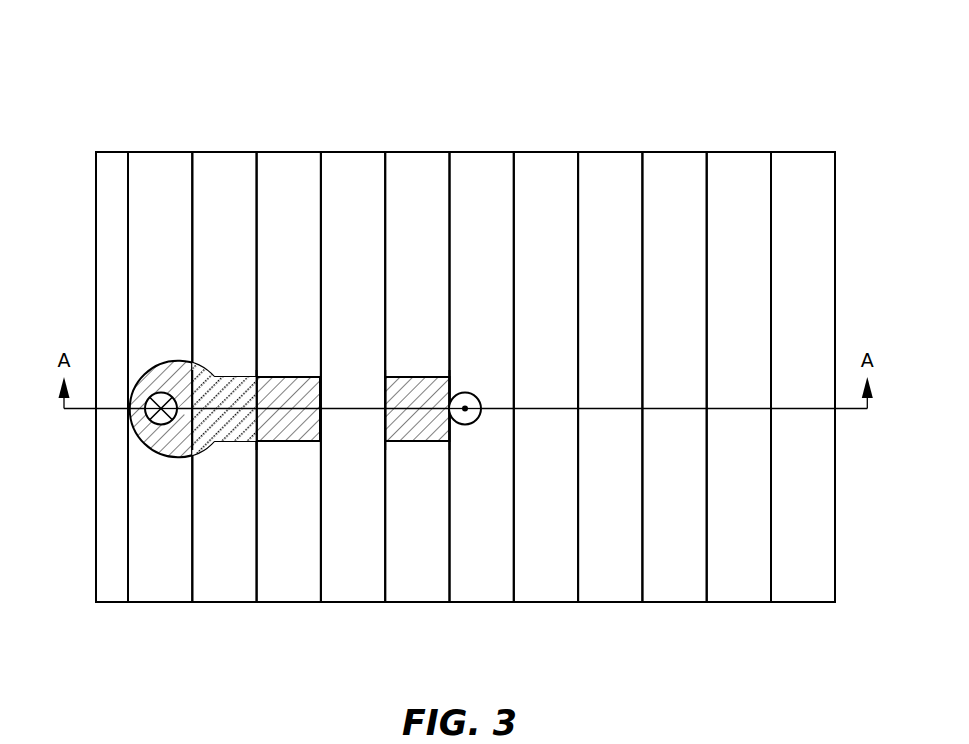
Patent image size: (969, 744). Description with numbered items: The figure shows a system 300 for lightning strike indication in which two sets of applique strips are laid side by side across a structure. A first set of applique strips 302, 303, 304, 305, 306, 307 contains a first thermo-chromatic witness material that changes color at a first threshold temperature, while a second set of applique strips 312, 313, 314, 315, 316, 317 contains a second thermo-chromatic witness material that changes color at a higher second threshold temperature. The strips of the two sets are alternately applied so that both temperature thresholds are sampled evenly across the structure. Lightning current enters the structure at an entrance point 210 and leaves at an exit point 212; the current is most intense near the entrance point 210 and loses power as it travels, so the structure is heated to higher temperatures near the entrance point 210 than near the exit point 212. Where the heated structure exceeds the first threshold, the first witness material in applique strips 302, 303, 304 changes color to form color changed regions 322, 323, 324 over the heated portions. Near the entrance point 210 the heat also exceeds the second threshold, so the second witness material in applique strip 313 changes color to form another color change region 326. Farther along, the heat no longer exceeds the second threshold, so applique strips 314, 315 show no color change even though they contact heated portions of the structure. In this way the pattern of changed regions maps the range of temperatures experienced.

The system for lightning strike indication 300 is at (150, 45).
The applique strip 302 is at (157, 152).
The applique strip 303 is at (289, 152).
The applique strip 304 is at (416, 152).
The applique strip 305 is at (546, 152).
The applique strip 306 is at (677, 152).
The applique strip 307 is at (804, 152).
The applique strip 312 is at (112, 602).
The applique strip 313 is at (223, 602).
The applique strip 314 is at (348, 602).
The applique strip 315 is at (483, 602).
The applique strip 316 is at (615, 602).
The applique strip 317 is at (742, 602).
The color changed region 322 is at (168, 360).
The color changed region 323 is at (297, 377).
The color changed region 324 is at (420, 441).
The color change region 326 is at (229, 441).
The entrance point 210 is at (150, 397).
The exit point 212 is at (472, 393).